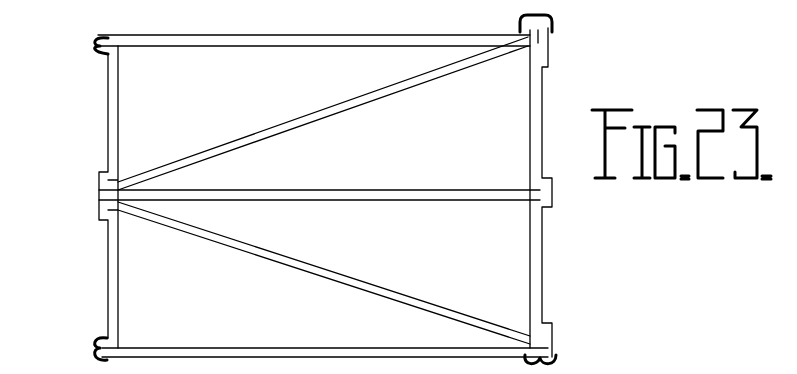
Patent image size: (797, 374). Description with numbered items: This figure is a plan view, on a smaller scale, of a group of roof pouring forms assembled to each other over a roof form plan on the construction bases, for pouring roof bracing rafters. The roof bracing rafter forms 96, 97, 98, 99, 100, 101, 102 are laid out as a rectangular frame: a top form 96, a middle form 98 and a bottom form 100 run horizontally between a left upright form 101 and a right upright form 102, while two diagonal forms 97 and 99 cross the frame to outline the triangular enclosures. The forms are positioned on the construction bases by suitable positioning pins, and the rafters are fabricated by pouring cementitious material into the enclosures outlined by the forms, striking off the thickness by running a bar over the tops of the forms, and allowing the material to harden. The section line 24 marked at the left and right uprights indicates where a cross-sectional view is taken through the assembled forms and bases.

The section line of FIG. 24 is at (62, 62).
The roof bracing rafter form 96 is at (267, 35).
The roof bracing rafter form 97 is at (349, 112).
The roof bracing rafter form 98 is at (372, 190).
The roof bracing rafter form 99 is at (348, 275).
The roof bracing rafter form 100 is at (307, 347).
The roof bracing rafter form 101 is at (120, 290).
The roof bracing rafter form 102 is at (552, 250).